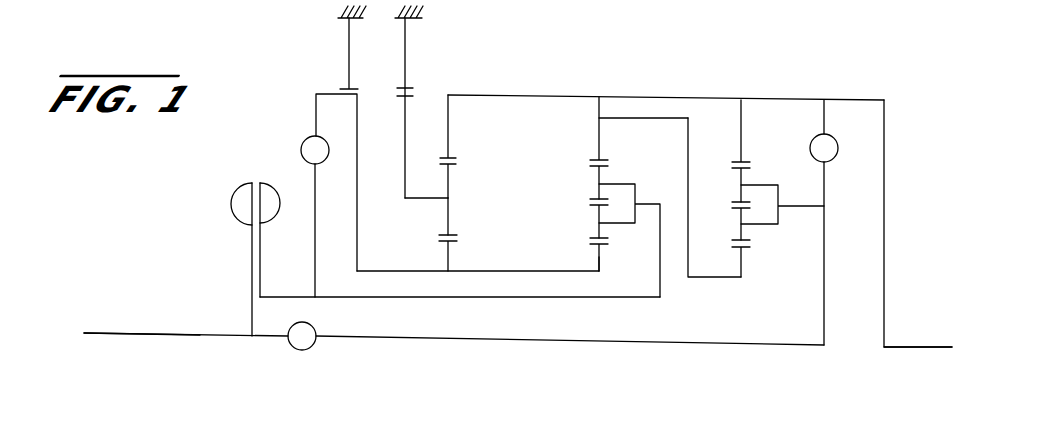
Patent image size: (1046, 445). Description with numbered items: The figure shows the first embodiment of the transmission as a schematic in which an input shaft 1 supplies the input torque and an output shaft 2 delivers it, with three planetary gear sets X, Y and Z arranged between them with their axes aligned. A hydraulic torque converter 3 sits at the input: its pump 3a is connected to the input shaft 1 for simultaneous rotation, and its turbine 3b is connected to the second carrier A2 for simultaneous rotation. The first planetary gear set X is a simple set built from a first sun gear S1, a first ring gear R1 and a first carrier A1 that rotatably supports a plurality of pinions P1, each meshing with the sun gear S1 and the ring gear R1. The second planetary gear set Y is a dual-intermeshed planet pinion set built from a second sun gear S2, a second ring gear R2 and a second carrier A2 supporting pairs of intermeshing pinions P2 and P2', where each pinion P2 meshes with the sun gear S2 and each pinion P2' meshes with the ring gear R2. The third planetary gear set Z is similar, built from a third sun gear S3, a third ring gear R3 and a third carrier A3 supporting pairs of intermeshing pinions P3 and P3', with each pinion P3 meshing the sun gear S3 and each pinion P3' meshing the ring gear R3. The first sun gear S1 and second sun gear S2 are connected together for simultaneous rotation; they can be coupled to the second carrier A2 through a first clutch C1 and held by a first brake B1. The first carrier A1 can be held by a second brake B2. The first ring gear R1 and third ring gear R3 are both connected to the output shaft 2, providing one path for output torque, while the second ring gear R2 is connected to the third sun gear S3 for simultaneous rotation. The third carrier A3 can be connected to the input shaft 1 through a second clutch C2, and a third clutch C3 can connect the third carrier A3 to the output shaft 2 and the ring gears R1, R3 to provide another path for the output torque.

The input shaft 1 is at (135, 333).
The output shaft 2 is at (900, 346).
The hydraulic torque converter 3 is at (240, 248).
The pump 3a is at (245, 224).
The turbine 3b is at (265, 224).
The first brake B1 is at (345, 86).
The second brake B2 is at (408, 92).
The first clutch C1 is at (322, 161).
The second clutch C2 is at (312, 346).
The third clutch C3 is at (838, 144).
The first planetary gear set X is at (451, 214).
The second planetary gear set Y is at (610, 242).
The third planetary gear set Z is at (756, 244).
The first ring gear R1 is at (448, 125).
The pinion P1 is at (448, 185).
The first sun gear S1 is at (448, 258).
The first carrier A1 is at (412, 199).
The second ring gear R2 is at (599, 133).
The pinion P2' is at (570, 214).
The pinion P2 is at (573, 243).
The second sun gear S2 is at (600, 257).
The second carrier A2 is at (647, 203).
The third ring gear R3 is at (742, 128).
The pinion P3' is at (724, 217).
The pinion P3 is at (769, 254).
The third sun gear S3 is at (740, 260).
The third carrier A3 is at (793, 206).